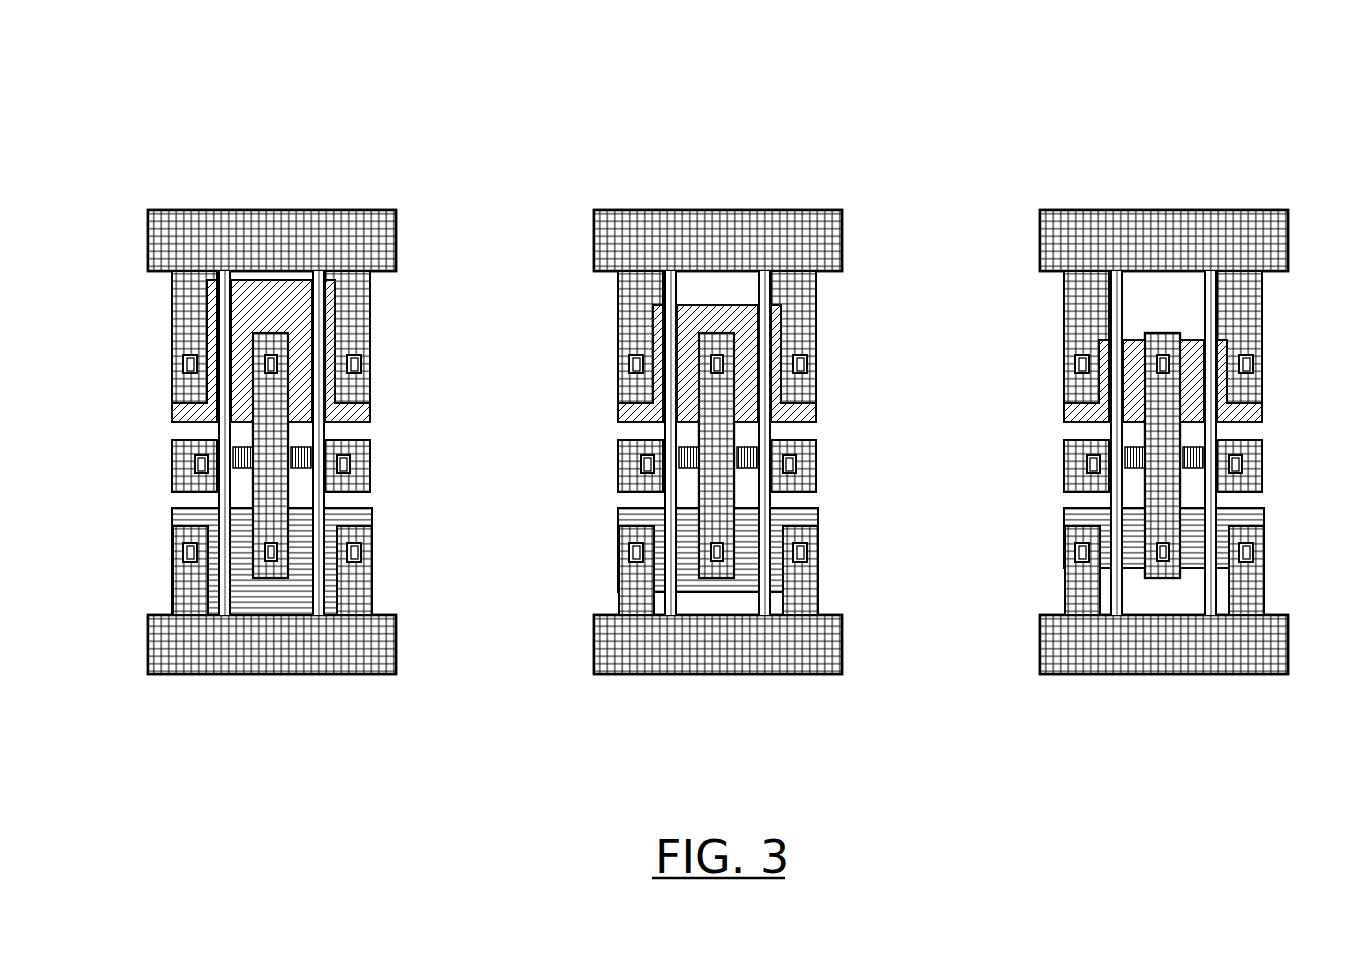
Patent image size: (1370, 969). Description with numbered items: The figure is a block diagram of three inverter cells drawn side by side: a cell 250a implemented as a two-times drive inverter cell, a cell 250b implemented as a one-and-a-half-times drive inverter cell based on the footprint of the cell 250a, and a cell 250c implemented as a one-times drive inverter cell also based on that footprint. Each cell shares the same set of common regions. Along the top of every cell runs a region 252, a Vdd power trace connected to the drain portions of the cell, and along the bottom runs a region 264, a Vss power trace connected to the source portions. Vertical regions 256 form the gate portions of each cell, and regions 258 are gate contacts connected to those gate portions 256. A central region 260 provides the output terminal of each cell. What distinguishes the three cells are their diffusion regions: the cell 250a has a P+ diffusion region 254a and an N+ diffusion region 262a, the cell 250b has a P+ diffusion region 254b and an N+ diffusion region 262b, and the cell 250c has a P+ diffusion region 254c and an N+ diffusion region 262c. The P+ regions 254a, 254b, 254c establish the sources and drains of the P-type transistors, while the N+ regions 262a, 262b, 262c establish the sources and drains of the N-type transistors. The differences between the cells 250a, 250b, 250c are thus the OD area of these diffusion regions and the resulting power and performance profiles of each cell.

The cell 250a is at (299, 383).
The cell 250b is at (745, 383).
The cell 250c is at (1190, 383).
The region 252 is at (197, 208).
The region 254a is at (370, 412).
The region 254b is at (757, 359).
The region 254c is at (1202, 359).
The region 256 is at (217, 428).
The region 258 is at (175, 443).
The region 260 is at (282, 472).
The region 262a is at (368, 515).
The region 262b is at (757, 561).
The region 262c is at (1202, 561).
The region 264 is at (197, 675).